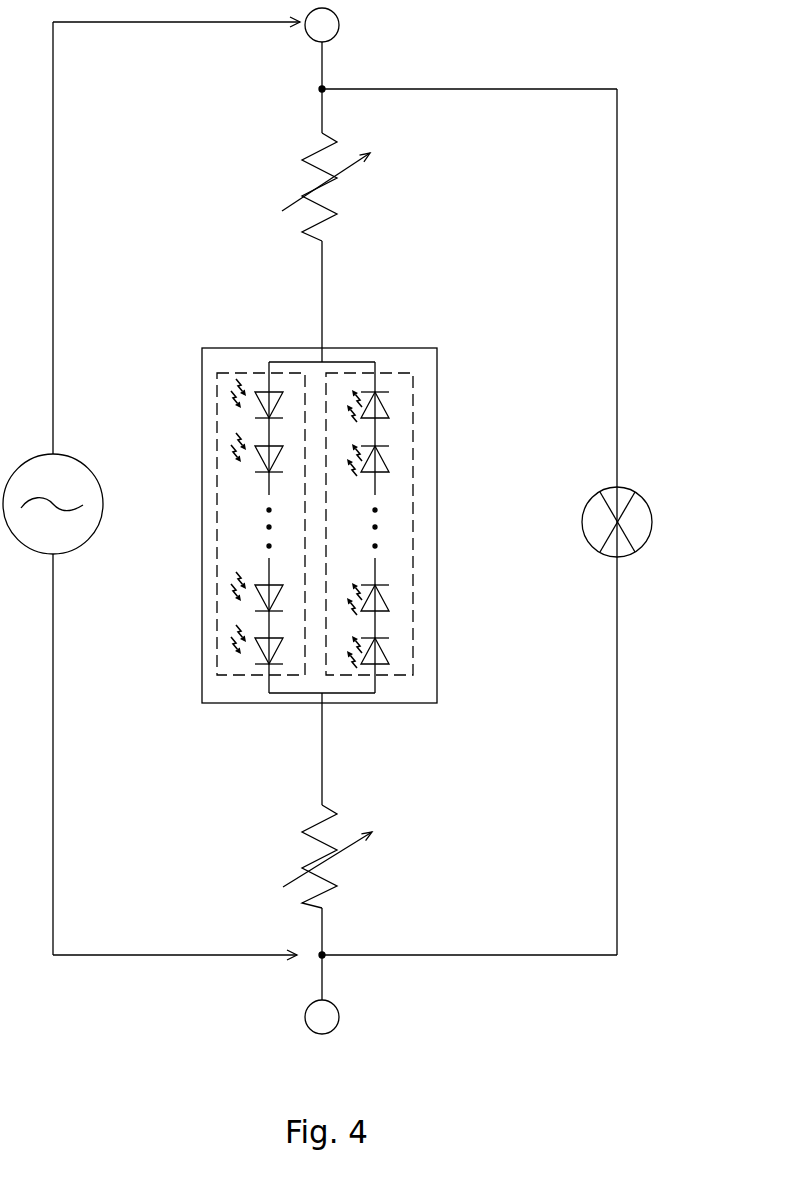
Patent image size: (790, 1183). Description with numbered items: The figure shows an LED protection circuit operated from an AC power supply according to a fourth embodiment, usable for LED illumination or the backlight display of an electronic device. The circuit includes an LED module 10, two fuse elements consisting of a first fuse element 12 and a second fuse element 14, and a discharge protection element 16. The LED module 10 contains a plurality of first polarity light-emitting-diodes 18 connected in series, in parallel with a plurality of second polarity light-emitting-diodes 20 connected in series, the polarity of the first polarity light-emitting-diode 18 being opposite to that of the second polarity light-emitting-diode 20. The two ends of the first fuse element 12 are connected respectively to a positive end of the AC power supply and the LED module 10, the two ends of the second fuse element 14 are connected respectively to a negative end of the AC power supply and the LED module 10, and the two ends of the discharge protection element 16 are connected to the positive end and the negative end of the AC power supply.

The LED module 10 is at (343, 347).
The first fuse element 12 is at (318, 170).
The second fuse element 14 is at (305, 840).
The discharge protection element 16 is at (632, 495).
The first polarity light-emitting-diode 18 is at (260, 373).
The second polarity light-emitting-diode 20 is at (387, 372).